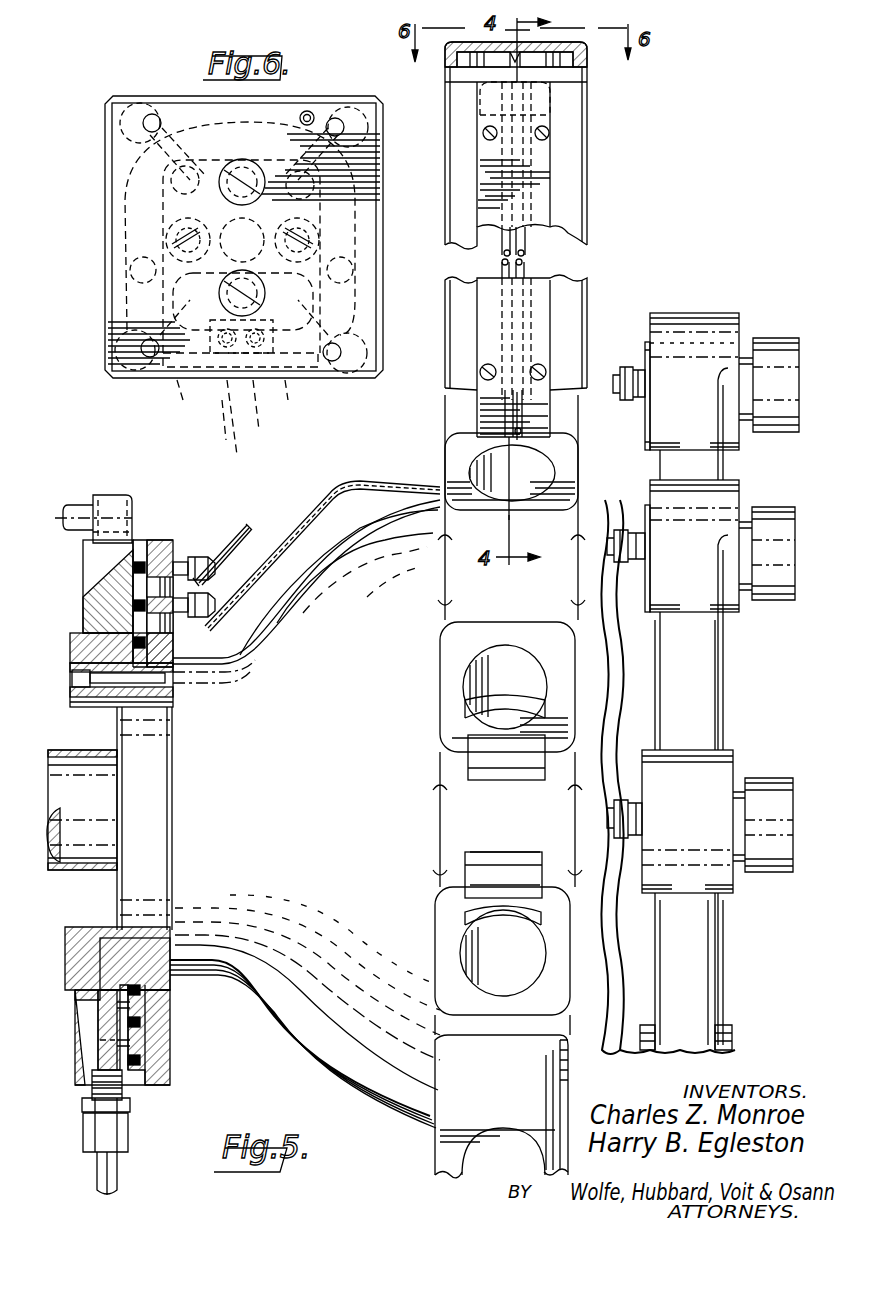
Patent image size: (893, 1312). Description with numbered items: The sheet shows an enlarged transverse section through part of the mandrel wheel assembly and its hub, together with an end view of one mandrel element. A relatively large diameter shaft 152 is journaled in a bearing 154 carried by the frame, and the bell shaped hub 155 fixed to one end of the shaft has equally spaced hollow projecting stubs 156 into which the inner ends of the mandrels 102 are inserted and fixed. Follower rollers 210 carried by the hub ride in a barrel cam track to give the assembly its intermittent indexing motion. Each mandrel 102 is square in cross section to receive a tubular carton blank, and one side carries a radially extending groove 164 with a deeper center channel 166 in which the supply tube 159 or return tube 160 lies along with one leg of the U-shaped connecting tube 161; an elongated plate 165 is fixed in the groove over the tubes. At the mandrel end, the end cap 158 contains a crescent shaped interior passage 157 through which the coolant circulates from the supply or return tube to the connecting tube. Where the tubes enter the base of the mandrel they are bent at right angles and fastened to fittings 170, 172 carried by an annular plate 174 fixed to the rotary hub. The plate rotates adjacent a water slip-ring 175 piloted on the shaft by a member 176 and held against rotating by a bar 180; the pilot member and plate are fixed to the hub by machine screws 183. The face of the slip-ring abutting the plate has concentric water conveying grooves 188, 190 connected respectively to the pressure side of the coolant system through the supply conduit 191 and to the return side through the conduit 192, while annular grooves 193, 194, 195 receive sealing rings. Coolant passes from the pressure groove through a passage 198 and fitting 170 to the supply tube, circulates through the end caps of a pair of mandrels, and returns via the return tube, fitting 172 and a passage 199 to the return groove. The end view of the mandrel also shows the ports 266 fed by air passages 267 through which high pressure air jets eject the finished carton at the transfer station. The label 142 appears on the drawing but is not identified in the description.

In FIG. 5, the mandrel 102 is at (578, 192).
In FIG. 5, the conduit lines 142 is at (270, 1042).
In FIG. 5, the shaft 152 is at (84, 850).
In FIG. 5, the bearing 154 is at (55, 752).
In FIG. 5, the hub 155 is at (305, 1075).
In FIG. 5, the hollow projecting stub 156 is at (442, 420).
In FIG. 6, the interior passage 157 is at (352, 226).
In FIG. 5, the interior passage 157 is at (565, 62).
In FIG. 6, the end cap 158 is at (180, 96).
In FIG. 5, the end cap 158 is at (455, 58).
In FIG. 6, the supply tube 159 is at (238, 440).
In FIG. 5, the supply tube 159 is at (480, 424).
In FIG. 5, the return tube 160 is at (248, 527).
In FIG. 6, the U-shaped connecting tube 161 is at (252, 418).
In FIG. 5, the U-shaped connecting tube 161 is at (528, 254).
In FIG. 6, the groove 164 is at (177, 388).
In FIG. 5, the groove 164 is at (548, 242).
In FIG. 6, the elongated plate 165 is at (287, 388).
In FIG. 5, the elongated plate 165 is at (540, 330).
In FIG. 6, the center channel 166 is at (232, 420).
In FIG. 5, the center channel 166 is at (500, 252).
In FIG. 5, the fitting 170 is at (238, 604).
In FIG. 5, the fitting 172 is at (183, 572).
In FIG. 5, the annular plate 174 is at (158, 1022).
In FIG. 5, the water slip-ring 175 is at (137, 545).
In FIG. 5, the pilot member 176 is at (125, 956).
In FIG. 5, the bar 180 is at (84, 505).
In FIG. 5, the machine screws 183 is at (162, 690).
In FIG. 5, the pressure groove 188 is at (140, 1005).
In FIG. 5, the return groove 190 is at (140, 1042).
In FIG. 5, the supply conduit 191 is at (115, 1165).
In FIG. 5, the return conduit 192 is at (99, 1184).
In FIG. 5, the annular groove 193 is at (135, 642).
In FIG. 5, the annular groove 194 is at (133, 603).
In FIG. 5, the annular groove 195 is at (133, 565).
In FIG. 5, the passage 198 is at (158, 622).
In FIG. 5, the passage 199 is at (178, 560).
In FIG. 5, the follower rollers 210 is at (778, 348).
In FIG. 6, the ports 266 is at (145, 126).
In FIG. 6, the air passages 267 is at (128, 172).